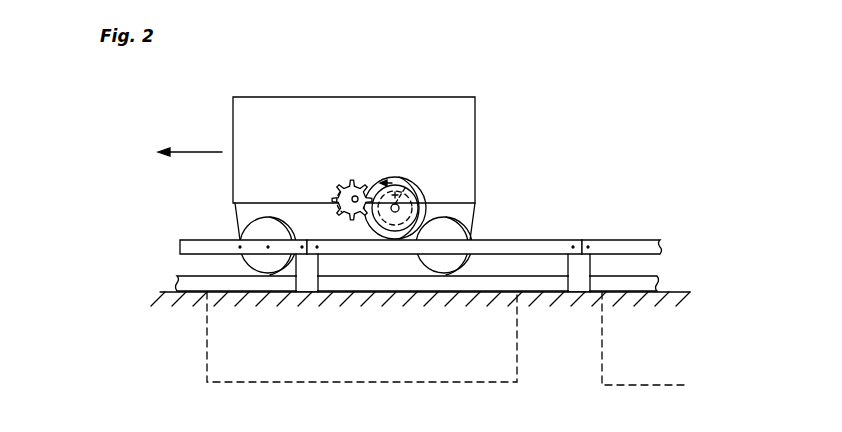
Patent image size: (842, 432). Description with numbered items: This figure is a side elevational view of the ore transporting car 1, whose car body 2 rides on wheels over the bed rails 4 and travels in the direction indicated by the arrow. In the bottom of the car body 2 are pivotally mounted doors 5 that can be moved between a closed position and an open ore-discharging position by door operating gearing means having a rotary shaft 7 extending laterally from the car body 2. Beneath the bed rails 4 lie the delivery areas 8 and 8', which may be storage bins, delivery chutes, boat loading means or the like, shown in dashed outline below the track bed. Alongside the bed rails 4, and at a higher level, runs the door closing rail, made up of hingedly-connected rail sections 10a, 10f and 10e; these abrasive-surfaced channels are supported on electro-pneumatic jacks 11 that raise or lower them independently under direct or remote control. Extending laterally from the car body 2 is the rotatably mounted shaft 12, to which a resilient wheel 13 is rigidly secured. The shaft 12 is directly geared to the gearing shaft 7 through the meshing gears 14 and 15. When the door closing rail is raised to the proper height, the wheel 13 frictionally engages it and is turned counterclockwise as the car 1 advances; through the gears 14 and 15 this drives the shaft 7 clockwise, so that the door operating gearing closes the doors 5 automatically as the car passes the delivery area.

The ore transporting car 1 is at (477, 128).
The car body 2 is at (363, 110).
The bed rails 4 is at (390, 285).
The pivotally mounted doors 5 is at (247, 260).
The rotary shaft 7 is at (345, 185).
The delivery area 8 is at (362, 353).
The delivery area 8' is at (643, 352).
The rail section 10a is at (203, 228).
The rail section 10e is at (643, 243).
The rail section 10f is at (552, 243).
The electro-pneumatic jacks 11 is at (318, 262).
The shaft 12 is at (391, 209).
The resilient wheel 13 is at (412, 197).
The gear 14 is at (405, 180).
The gear 15 is at (357, 190).